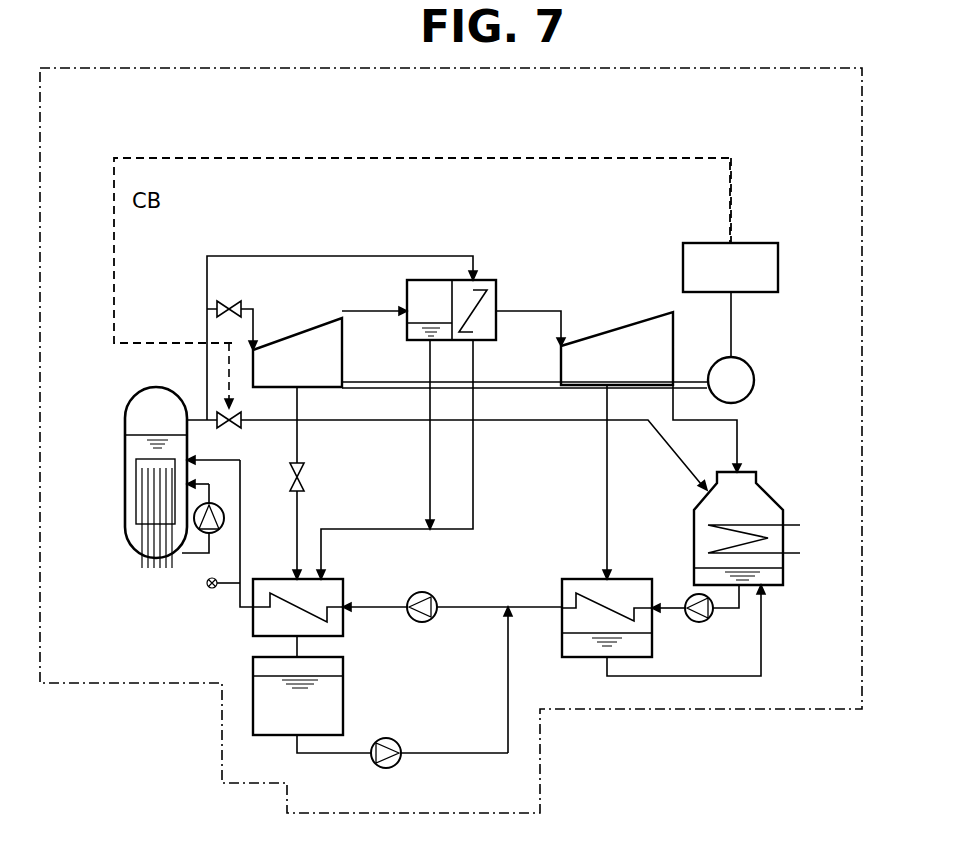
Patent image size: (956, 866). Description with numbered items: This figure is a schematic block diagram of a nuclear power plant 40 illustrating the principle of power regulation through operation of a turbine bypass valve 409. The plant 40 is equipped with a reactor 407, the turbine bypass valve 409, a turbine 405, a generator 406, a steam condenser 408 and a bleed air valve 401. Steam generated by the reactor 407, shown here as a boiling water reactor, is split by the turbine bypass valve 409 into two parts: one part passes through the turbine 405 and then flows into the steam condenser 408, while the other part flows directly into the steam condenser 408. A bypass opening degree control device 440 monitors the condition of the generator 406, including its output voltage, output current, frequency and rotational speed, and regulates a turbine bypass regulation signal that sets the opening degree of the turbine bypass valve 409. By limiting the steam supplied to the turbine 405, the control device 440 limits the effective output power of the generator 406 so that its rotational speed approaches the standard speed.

The nuclear power plant 40 is at (158, 70).
The bleed air valve 401 is at (304, 474).
The turbine 405 is at (307, 330).
The generator 406 is at (755, 383).
The reactor 407 is at (135, 393).
The steam condenser 408 is at (768, 490).
The turbine bypass valve 409 is at (235, 428).
The bypass opening degree control device 440 is at (683, 254).